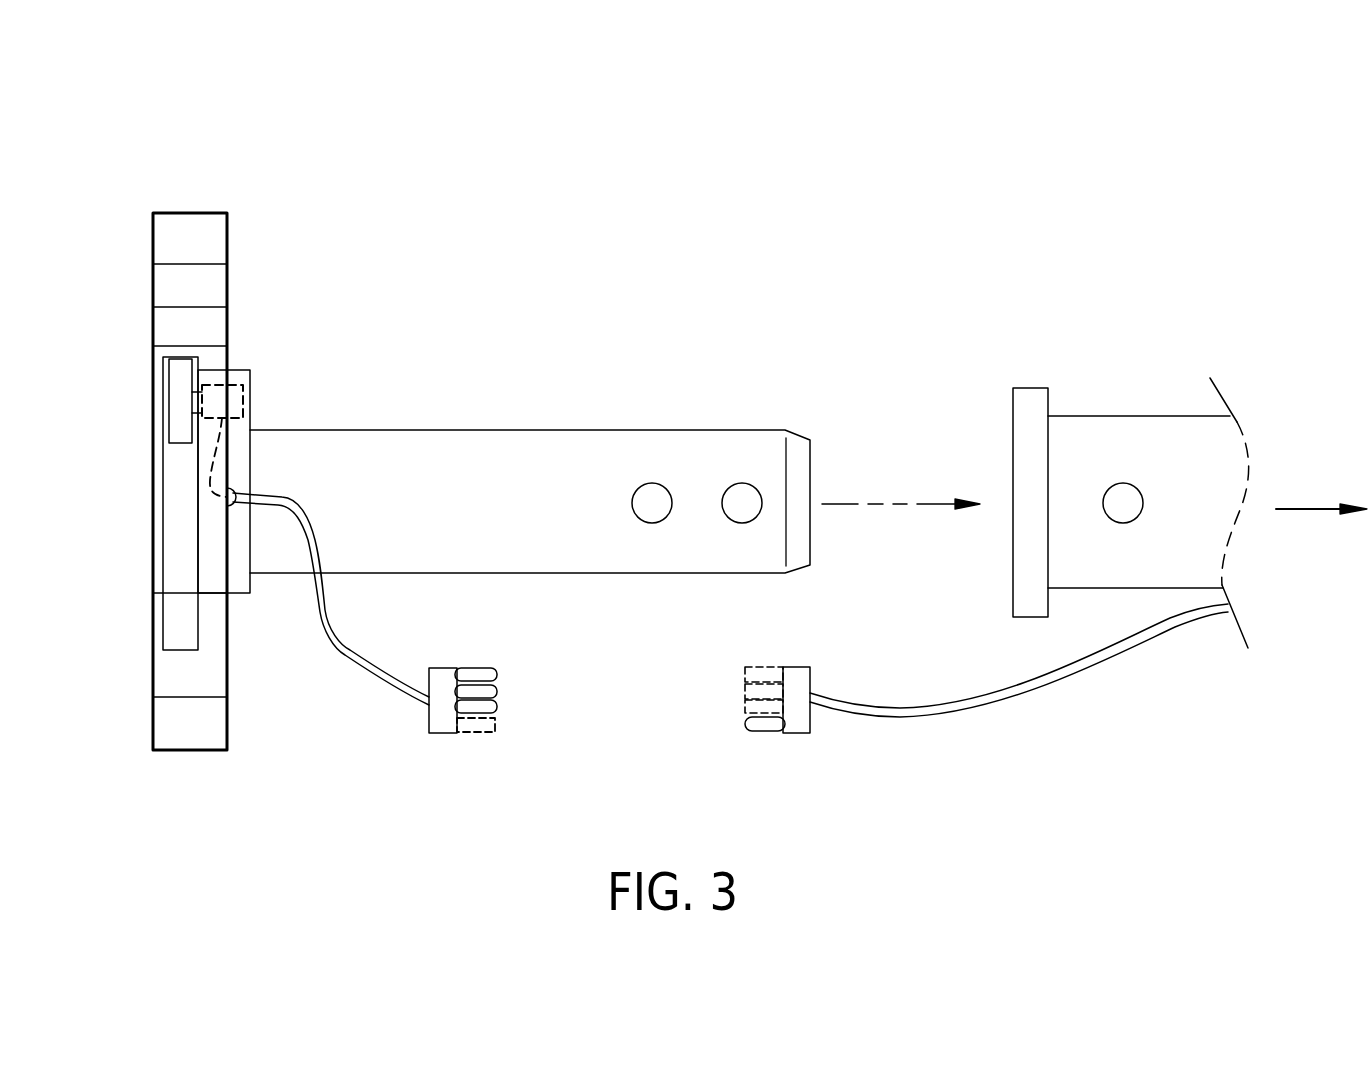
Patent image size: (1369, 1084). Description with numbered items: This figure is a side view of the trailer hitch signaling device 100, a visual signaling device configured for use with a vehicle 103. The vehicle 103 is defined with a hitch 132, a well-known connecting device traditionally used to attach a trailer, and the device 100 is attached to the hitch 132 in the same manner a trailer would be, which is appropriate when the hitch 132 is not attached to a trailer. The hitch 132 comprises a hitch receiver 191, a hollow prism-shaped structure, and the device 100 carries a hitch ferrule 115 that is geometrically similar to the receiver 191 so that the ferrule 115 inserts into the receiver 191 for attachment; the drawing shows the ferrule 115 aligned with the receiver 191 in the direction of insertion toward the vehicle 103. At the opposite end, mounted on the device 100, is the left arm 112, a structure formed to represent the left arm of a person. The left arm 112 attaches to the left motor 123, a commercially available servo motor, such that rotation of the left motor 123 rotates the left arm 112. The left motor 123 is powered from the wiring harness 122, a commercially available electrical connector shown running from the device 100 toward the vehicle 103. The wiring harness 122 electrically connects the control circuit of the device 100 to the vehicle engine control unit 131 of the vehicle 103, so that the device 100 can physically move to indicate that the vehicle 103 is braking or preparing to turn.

The trailer hitch signaling device 100 is at (82, 180).
The left arm 112 is at (182, 375).
The left motor 123 is at (237, 397).
The hitch ferrule 115 is at (580, 452).
The wiring harness 122 is at (747, 691).
The vehicle engine control unit 131 is at (942, 716).
The hitch 132 is at (1026, 353).
The hitch receiver 191 is at (1118, 427).
The vehicle 103 is at (1314, 489).